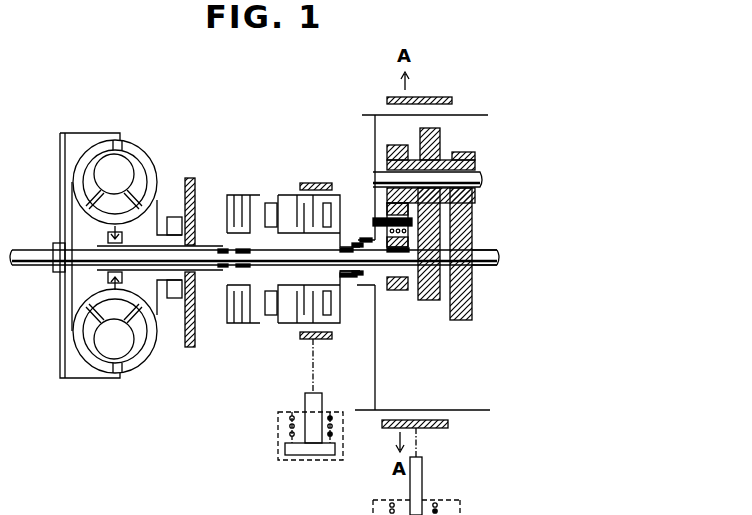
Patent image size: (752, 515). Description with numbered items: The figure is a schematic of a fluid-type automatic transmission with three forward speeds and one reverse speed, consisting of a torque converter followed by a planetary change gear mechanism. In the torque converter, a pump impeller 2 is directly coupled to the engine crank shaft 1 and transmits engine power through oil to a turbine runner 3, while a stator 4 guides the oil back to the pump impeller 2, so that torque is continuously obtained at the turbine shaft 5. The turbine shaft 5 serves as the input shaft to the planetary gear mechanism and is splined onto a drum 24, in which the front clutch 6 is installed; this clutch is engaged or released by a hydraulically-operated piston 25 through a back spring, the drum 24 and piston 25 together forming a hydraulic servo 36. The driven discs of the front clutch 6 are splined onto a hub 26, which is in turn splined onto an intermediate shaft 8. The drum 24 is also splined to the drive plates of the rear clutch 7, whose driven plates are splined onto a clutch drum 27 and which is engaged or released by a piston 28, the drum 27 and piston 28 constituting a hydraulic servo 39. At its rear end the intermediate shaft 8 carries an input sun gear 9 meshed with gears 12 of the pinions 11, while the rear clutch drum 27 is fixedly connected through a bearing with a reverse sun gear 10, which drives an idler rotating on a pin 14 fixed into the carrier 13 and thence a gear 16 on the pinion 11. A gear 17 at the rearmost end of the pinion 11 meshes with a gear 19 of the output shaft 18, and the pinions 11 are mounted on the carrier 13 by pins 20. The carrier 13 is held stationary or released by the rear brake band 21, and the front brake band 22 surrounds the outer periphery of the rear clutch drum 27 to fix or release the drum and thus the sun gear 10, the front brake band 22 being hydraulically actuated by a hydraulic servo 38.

The engine crank shaft 1 is at (40, 266).
The pump impeller 2 is at (143, 151).
The turbine runner 3 is at (83, 172).
The stator 4 is at (103, 208).
The turbine shaft 5 is at (203, 257).
The front clutch 6 is at (252, 308).
The rear clutch 7 is at (307, 315).
The intermediate shaft 8 is at (342, 270).
The input sun gear 9 is at (430, 300).
The reverse sun gear 10 is at (397, 290).
The pinion 11 is at (480, 148).
The gear of pinion 12 is at (440, 137).
The carrier 13 is at (387, 156).
The pin 14 is at (373, 222).
The gear of pinion 16 is at (385, 150).
The gear of pinion 17 is at (470, 165).
The output shaft 18 is at (483, 273).
The gear of output shaft 19 is at (472, 237).
The pin 20 is at (477, 187).
The rear brake band 21 is at (428, 97).
The front brake band 22 is at (322, 183).
The drum 24 is at (233, 195).
The piston 25 is at (280, 203).
The hub 26 is at (235, 280).
The clutch drum 27 is at (317, 340).
The piston 28 is at (337, 322).
The hydraulic servo 36 is at (290, 205).
The hydraulic servo 38 is at (322, 462).
The hydraulic servo 39 is at (337, 197).